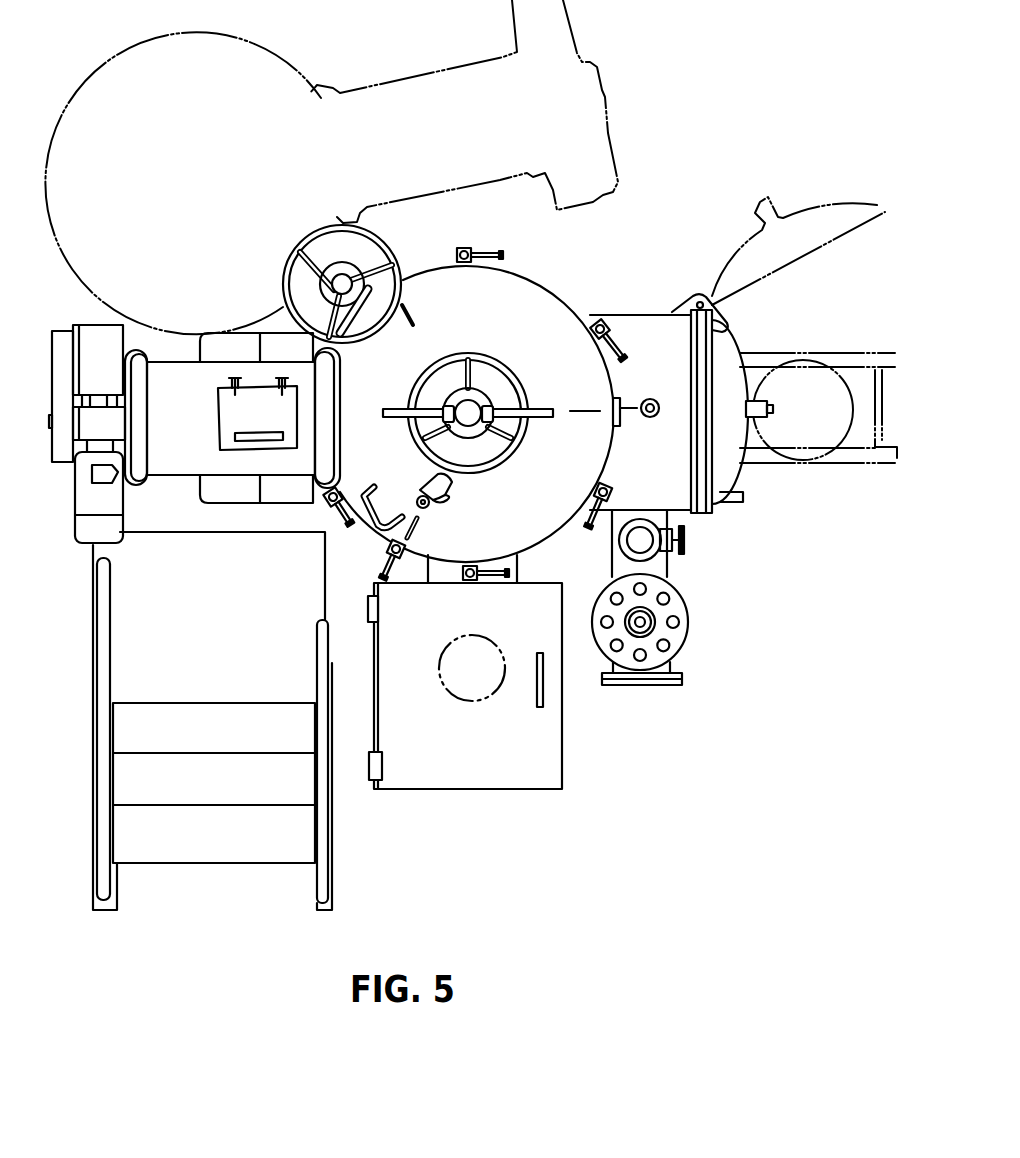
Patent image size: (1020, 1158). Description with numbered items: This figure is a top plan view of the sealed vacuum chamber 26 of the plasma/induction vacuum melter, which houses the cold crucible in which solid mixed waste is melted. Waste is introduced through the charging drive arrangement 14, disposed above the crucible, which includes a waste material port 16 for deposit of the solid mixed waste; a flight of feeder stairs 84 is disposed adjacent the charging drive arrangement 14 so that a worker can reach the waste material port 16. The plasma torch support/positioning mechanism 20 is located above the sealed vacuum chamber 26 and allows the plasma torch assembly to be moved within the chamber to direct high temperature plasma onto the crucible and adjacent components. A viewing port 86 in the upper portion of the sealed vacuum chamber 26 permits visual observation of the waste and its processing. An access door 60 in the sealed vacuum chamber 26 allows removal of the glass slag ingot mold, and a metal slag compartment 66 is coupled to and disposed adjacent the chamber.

The charging drive arrangement 14 is at (78, 447).
The waste material port 16 is at (238, 408).
The plasma torch support/positioning mechanism 20 is at (491, 403).
The sealed vacuum chamber 26 is at (558, 240).
The access door 60 is at (735, 478).
The metal slag compartment 66 is at (513, 789).
The flight of feeder stairs 84 is at (128, 776).
The viewing port 86 is at (445, 508).